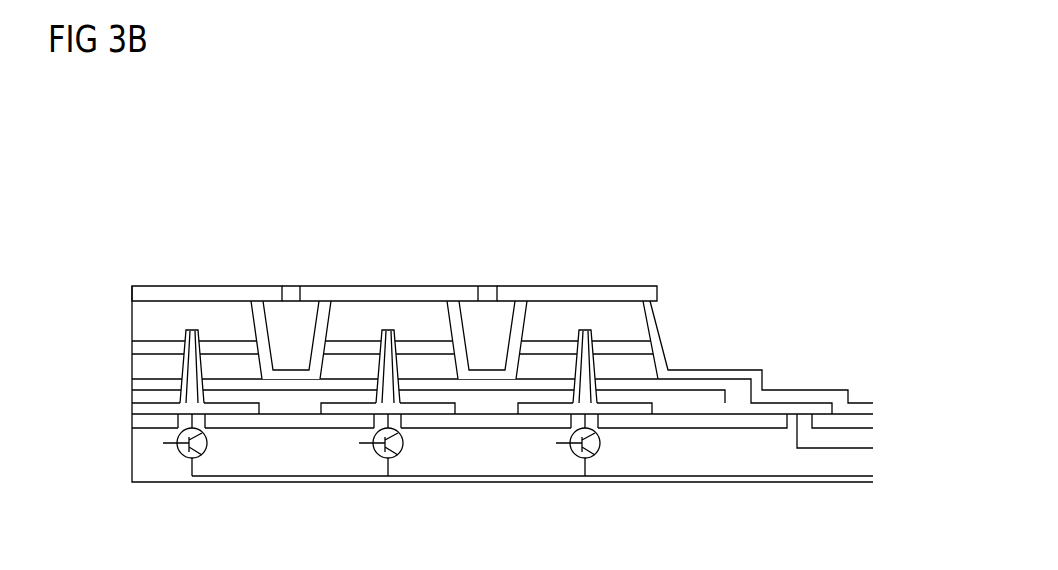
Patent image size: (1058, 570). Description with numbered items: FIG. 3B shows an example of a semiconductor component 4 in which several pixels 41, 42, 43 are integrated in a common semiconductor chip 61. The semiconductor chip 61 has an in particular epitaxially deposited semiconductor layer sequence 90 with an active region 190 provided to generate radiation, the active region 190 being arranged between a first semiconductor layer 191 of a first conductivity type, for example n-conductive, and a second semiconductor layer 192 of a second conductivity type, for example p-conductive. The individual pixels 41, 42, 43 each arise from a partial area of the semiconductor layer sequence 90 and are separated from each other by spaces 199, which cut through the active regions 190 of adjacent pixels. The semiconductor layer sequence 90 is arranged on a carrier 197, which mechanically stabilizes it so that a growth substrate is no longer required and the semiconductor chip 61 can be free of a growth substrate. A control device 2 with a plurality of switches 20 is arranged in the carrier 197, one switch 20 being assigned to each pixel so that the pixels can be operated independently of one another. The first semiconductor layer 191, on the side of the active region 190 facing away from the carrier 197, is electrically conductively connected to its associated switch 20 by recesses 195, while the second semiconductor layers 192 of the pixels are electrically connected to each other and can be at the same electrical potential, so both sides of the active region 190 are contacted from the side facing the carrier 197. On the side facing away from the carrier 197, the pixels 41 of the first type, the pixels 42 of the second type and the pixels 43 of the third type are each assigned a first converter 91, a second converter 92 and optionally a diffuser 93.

The control device 2 is at (99, 462).
The semiconductor component 4 is at (127, 300).
The semiconductor chip 61 is at (462, 364).
The switch 20 is at (203, 454).
The pixel of the first type 41 is at (577, 227).
The pixel of the second type 42 is at (389, 227).
The pixel of the third type 43 is at (196, 227).
The semiconductor layer sequence 90 is at (695, 300).
The first converter 91 is at (611, 293).
The second converter 92 is at (431, 293).
The diffuser 93 is at (196, 258).
The active region 190 is at (212, 348).
The first semiconductor layer 191 is at (238, 313).
The second semiconductor layer 192 is at (288, 310).
The recess 195 is at (187, 330).
The carrier 197 is at (862, 458).
The space 199 is at (247, 371).